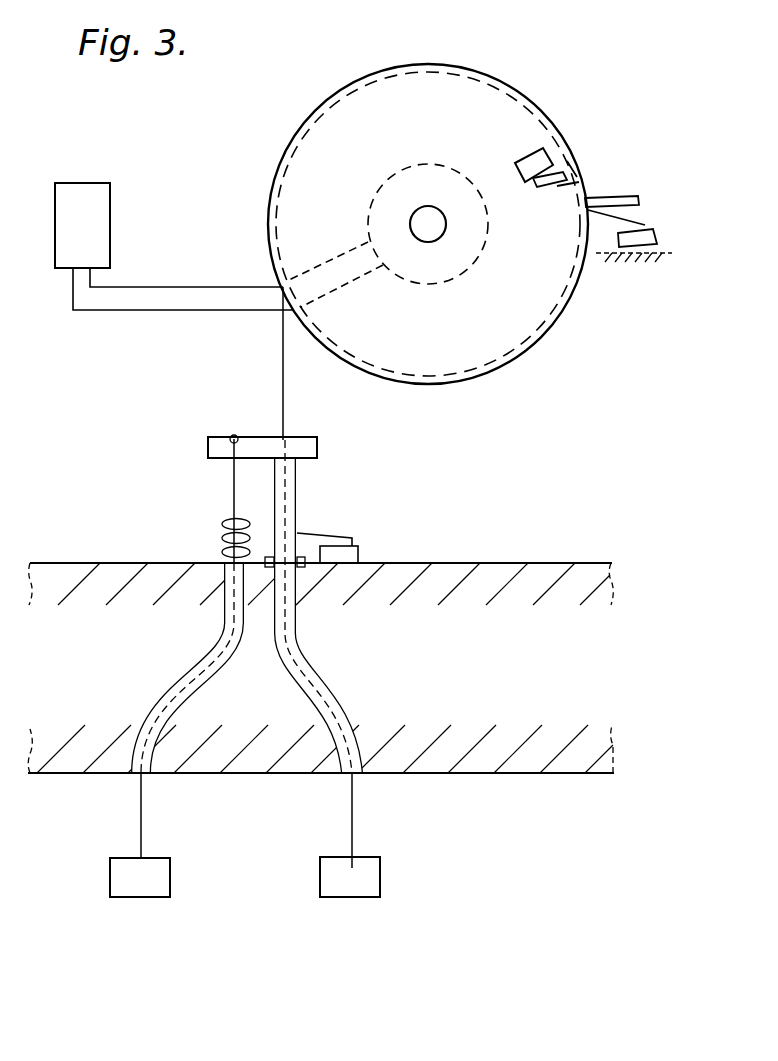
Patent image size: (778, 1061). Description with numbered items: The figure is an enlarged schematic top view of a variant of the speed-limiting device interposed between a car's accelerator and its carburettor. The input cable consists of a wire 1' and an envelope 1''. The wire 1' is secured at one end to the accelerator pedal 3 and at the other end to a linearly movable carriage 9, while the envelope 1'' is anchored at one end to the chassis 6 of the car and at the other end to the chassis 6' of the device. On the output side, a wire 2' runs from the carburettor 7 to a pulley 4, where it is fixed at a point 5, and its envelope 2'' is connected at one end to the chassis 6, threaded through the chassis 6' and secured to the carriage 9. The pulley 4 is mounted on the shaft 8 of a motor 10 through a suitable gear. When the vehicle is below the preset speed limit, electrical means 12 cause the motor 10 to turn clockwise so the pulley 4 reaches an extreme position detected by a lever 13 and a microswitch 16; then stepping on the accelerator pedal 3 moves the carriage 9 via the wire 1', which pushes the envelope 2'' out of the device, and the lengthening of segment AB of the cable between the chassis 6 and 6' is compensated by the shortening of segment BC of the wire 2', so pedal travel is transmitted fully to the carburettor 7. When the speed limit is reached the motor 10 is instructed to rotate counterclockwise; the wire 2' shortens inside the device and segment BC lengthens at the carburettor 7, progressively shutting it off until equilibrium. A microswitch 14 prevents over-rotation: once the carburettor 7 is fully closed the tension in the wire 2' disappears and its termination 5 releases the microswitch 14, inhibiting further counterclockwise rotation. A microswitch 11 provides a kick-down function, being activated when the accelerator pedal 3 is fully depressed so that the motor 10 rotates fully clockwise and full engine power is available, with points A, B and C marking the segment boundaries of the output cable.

The pulley 4 is at (412, 93).
The point (termination of wire 2') 5 is at (573, 172).
The motor's shaft 8 is at (411, 213).
The motor 10 is at (457, 164).
The electrical means 12 is at (103, 212).
The lever 13 is at (640, 198).
The microswitch 14 is at (548, 160).
The microswitch 16 is at (655, 235).
The linearly movable carriage 9 is at (318, 449).
The wire of the input cable 1' is at (195, 646).
The wire 2' is at (317, 577).
The envelope 1'' is at (156, 688).
The envelope 2'' is at (346, 634).
The microswitch 11 is at (359, 554).
The chassis of the car 6 is at (320, 773).
The chassis of the device 6' is at (321, 567).
The accelerator pedal 3 is at (170, 878).
The carburettor 7 is at (380, 878).
The point A (end of segment AB) A is at (300, 567).
The point B (junction of segments AB and BC) B is at (352, 773).
The point C (end of segment BC) C is at (351, 866).